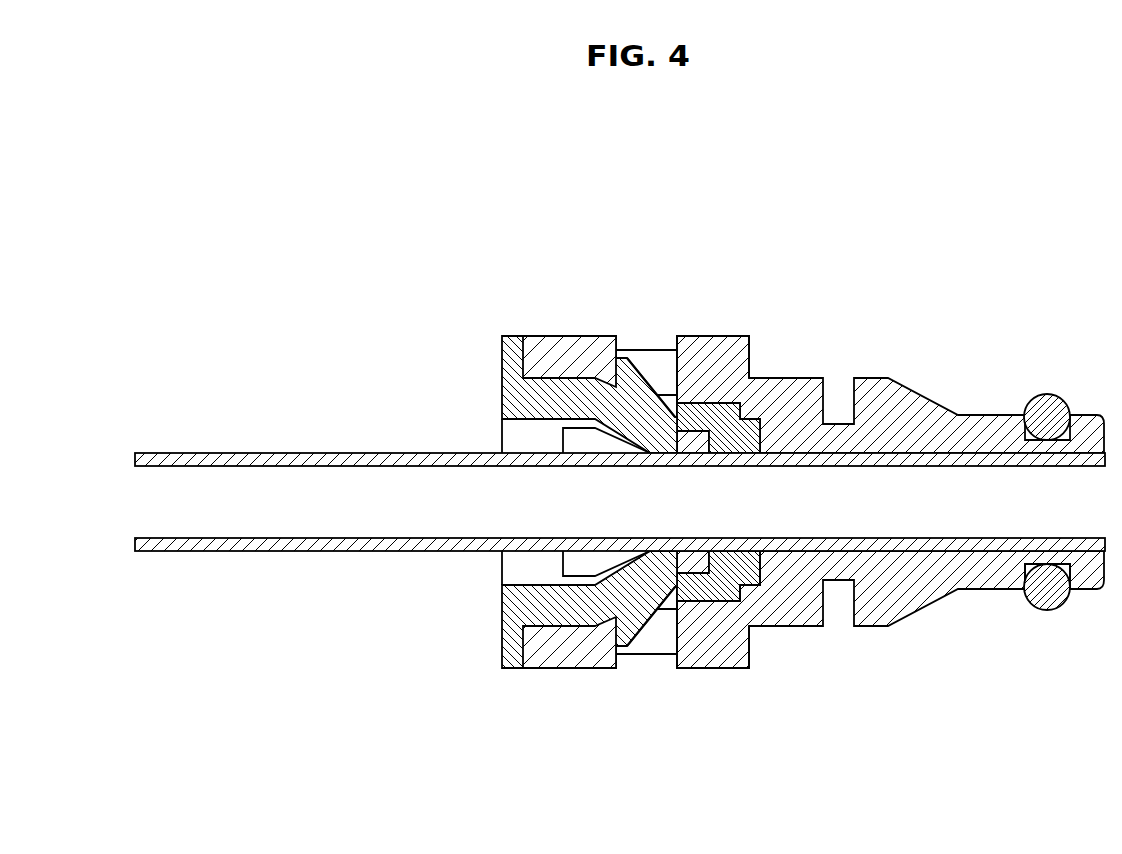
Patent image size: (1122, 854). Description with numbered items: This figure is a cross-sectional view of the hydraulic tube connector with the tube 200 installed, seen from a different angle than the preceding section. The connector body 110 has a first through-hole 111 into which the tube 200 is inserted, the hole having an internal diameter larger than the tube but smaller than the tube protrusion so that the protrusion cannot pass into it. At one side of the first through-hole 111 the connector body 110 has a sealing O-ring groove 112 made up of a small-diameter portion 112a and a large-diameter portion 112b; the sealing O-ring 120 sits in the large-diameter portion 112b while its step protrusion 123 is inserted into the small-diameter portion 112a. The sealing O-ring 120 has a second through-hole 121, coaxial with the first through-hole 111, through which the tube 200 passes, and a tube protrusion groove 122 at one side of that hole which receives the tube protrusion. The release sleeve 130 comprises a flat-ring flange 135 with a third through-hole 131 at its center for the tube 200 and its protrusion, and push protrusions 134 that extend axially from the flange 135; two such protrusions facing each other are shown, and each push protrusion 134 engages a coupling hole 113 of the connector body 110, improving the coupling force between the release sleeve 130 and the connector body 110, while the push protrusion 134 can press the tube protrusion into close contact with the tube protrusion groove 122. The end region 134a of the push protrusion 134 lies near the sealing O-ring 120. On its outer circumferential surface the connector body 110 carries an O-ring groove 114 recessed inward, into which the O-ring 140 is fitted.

The connector body 110 is at (880, 477).
The first through-hole 111 is at (990, 461).
The sealing O-ring groove 112 is at (747, 656).
The small-diameter portion 112a is at (762, 587).
The large-diameter portion 112b is at (716, 603).
The coupling hole 113 is at (661, 360).
The O-ring groove 114 is at (1026, 578).
The sealing O-ring 120 is at (702, 394).
The second through-hole 121 is at (747, 633).
The tube protrusion groove 122 is at (698, 558).
The step protrusion 123 is at (757, 419).
The release sleeve 130 is at (544, 502).
The third through-hole 131 is at (532, 419).
The push protrusion 134 is at (646, 380).
The wedge tip 134a is at (675, 566).
The flange 135 is at (513, 347).
The O-ring 140 is at (1058, 384).
The tube 200 is at (231, 441).